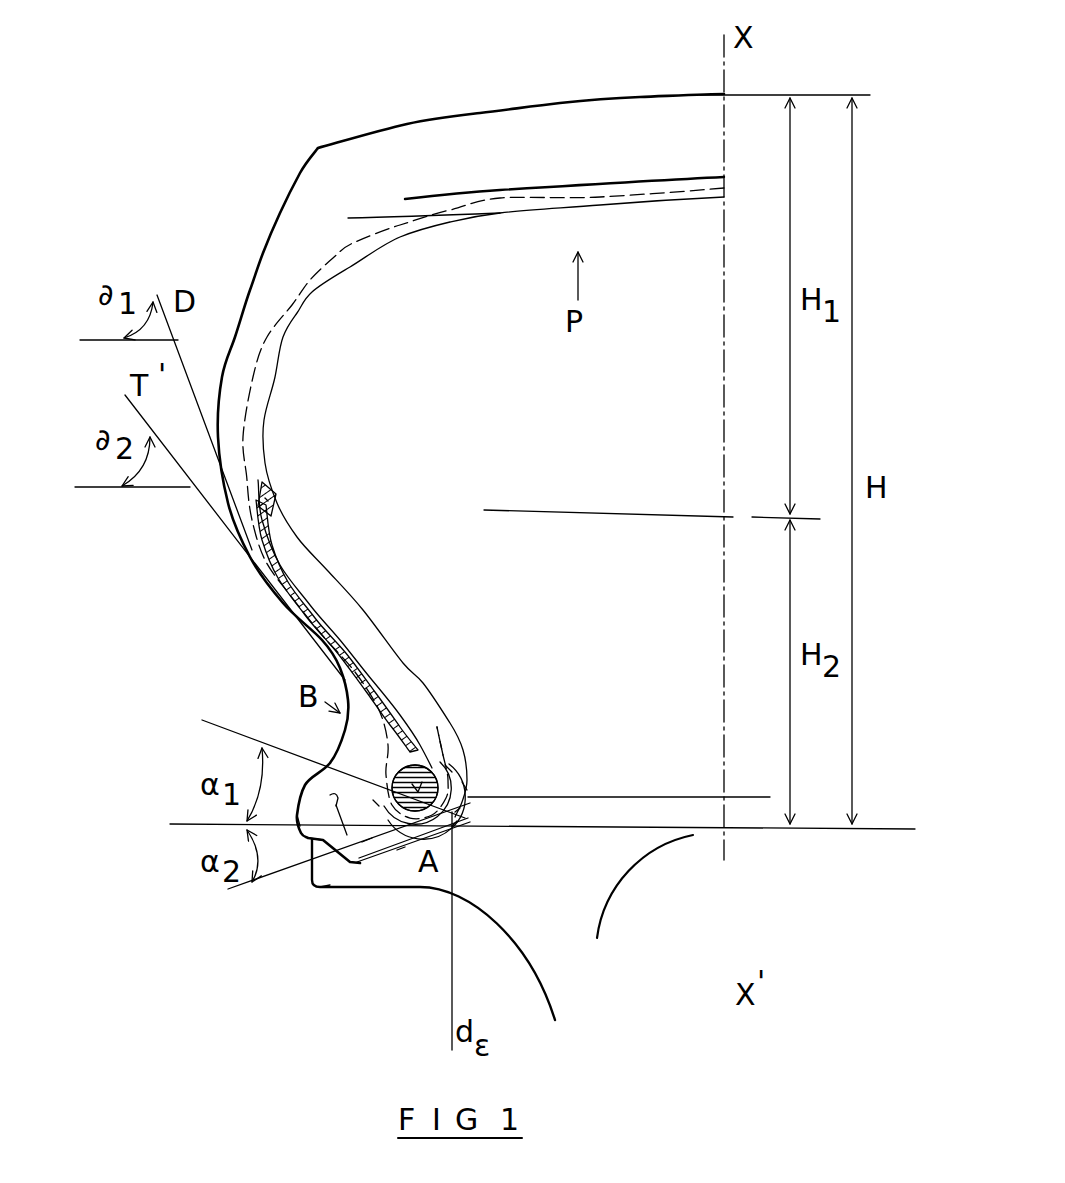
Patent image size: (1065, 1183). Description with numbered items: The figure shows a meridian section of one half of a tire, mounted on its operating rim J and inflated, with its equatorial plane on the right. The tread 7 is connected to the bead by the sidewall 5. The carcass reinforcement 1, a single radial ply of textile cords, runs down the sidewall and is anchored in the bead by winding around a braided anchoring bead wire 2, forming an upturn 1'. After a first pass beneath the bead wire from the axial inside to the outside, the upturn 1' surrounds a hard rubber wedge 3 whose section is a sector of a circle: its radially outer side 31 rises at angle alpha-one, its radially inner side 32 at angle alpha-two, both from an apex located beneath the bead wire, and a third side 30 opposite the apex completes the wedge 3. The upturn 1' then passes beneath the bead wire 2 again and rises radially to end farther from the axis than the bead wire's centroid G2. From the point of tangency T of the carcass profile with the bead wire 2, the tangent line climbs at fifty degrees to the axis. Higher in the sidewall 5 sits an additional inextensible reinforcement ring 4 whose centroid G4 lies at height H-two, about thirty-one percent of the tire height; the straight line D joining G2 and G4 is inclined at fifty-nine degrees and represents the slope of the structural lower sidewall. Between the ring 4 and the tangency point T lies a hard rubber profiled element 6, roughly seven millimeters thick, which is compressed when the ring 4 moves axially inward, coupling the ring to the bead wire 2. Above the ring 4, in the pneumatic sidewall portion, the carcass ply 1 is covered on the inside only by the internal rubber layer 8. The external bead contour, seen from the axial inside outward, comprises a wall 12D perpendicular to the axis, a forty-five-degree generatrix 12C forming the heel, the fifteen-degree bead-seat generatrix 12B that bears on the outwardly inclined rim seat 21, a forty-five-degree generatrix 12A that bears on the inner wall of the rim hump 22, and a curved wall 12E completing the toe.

The carcass reinforcement 1 is at (483, 503).
The upturn 1' is at (460, 691).
The anchoring bead wire 2 is at (445, 785).
The profiled element or wedge 3 is at (313, 842).
The additional inextensible reinforcement ring 4 is at (264, 492).
The sidewall 5 is at (255, 543).
The profiled element 6 is at (340, 620).
The tread 7 is at (418, 165).
The internal layer of rubber 8 is at (268, 375).
The rim seat 21 is at (397, 850).
The protrusion or hump 22 is at (330, 878).
The third side of wedge 30 is at (335, 800).
The radially outer side of wedge 31 is at (373, 800).
The radially inner side of wedge 32 is at (368, 805).
The frustoconical generatrix 12A is at (313, 857).
The frustoconical generatrix of the bead seat 12B is at (457, 827).
The frustoconical generatrix 12C is at (455, 812).
The wall 12D is at (462, 782).
The curved wall 12E is at (300, 814).
The center of gravity of the bead wire section G2 is at (421, 783).
The center of gravity of the additional ring section G4 is at (272, 505).
The point of tangency T is at (445, 765).
The operating rim J is at (593, 888).